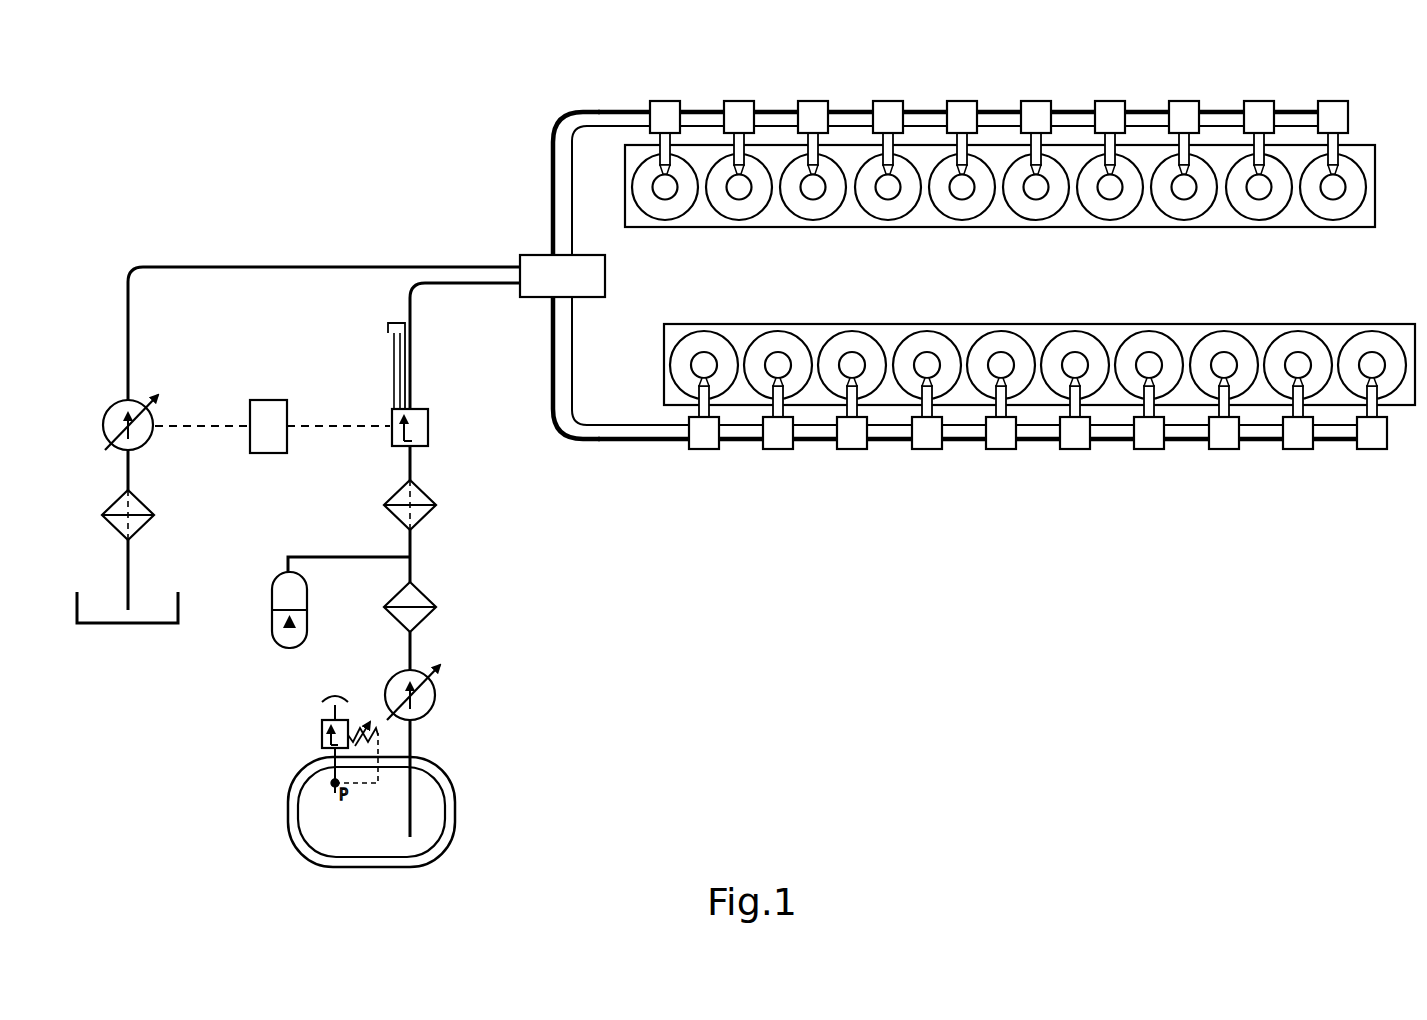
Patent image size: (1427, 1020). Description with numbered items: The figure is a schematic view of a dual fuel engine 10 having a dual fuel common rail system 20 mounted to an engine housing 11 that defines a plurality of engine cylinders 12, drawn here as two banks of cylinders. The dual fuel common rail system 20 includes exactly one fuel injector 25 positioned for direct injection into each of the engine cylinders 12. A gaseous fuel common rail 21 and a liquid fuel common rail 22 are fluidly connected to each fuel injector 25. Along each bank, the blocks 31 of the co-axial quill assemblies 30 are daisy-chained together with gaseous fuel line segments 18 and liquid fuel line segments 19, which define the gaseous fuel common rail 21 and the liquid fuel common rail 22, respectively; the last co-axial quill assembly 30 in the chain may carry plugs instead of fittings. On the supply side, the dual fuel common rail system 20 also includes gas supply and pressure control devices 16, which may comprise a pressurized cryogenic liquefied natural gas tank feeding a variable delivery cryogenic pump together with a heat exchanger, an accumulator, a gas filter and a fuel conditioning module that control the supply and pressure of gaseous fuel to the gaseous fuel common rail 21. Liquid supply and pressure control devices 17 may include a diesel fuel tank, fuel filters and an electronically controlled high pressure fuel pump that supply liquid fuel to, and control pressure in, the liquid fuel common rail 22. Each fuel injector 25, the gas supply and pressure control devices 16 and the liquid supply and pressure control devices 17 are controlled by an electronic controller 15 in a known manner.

The dual fuel engine 10 is at (1010, 288).
The engine housing 11 is at (712, 228).
The engine cylinder 12 is at (793, 208).
The electronic controller 15 is at (270, 400).
The gas supply and pressure control devices 16 is at (262, 572).
The liquid supply and pressure control devices 17 is at (88, 398).
The gaseous fuel line segments 18 is at (1070, 127).
The liquid fuel line segments 19 is at (1148, 108).
The dual fuel common rail system 20 is at (1010, 76).
The gaseous fuel common rail 21 is at (851, 120).
The liquid fuel common rail 22 is at (1070, 108).
The fuel injector 25 is at (898, 192).
The co-axial quill assembly 30 is at (964, 98).
The block 31 is at (811, 100).